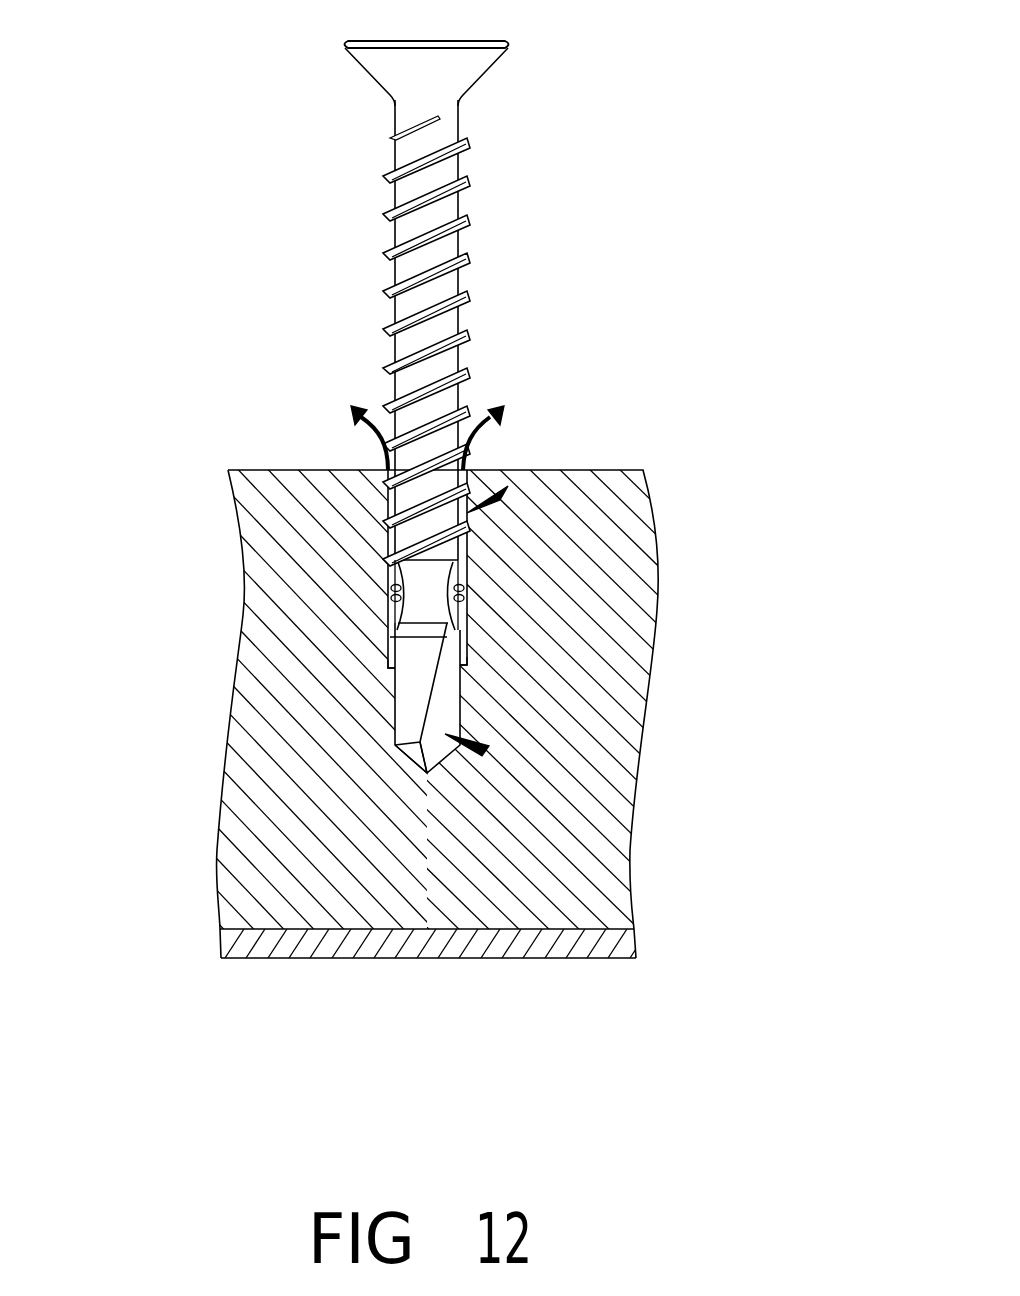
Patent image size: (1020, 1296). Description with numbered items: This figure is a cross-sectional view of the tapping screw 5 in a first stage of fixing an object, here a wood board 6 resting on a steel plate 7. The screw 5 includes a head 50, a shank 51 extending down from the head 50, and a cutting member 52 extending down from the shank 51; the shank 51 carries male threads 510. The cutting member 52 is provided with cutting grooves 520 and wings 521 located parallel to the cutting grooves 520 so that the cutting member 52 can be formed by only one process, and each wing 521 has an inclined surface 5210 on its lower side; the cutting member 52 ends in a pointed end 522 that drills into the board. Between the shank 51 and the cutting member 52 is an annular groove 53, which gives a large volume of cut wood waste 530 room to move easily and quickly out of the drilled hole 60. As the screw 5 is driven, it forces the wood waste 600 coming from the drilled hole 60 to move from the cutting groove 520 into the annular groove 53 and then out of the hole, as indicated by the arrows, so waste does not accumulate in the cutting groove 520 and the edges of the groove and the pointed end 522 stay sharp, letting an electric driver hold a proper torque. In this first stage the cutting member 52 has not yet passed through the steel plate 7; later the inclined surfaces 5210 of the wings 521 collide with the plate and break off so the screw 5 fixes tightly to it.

The tapping screw 5 is at (458, 292).
The head 50 is at (474, 64).
The shank 51 is at (439, 333).
The male threads 510 is at (470, 258).
The wood waste 600 is at (335, 400).
The drilled hole 60 is at (500, 494).
The annular groove 53 is at (425, 649).
The cut wood waste 530 is at (468, 588).
The wings 521 is at (386, 650).
The inclined surface 5210 is at (388, 676).
The cutting member 52 is at (438, 861).
The cutting groove 520 is at (487, 748).
The drill point 522 is at (427, 778).
The substrate / wall 6 is at (621, 890).
The steel plate 7 is at (245, 955).